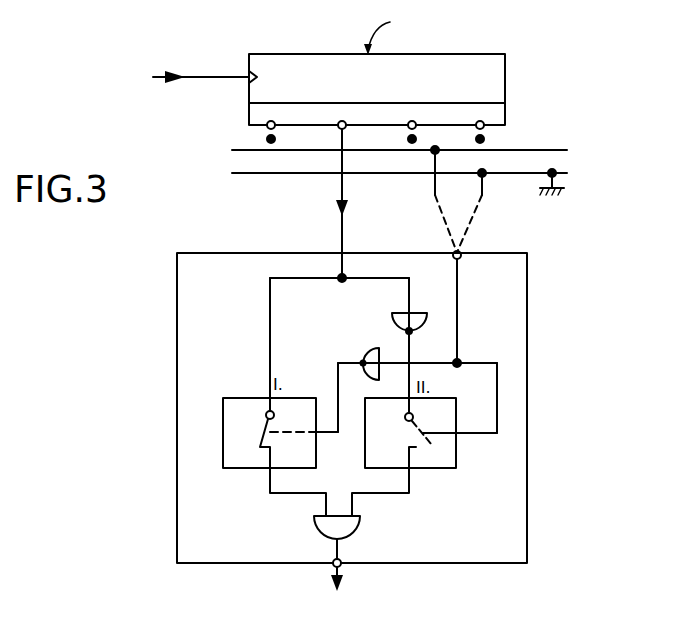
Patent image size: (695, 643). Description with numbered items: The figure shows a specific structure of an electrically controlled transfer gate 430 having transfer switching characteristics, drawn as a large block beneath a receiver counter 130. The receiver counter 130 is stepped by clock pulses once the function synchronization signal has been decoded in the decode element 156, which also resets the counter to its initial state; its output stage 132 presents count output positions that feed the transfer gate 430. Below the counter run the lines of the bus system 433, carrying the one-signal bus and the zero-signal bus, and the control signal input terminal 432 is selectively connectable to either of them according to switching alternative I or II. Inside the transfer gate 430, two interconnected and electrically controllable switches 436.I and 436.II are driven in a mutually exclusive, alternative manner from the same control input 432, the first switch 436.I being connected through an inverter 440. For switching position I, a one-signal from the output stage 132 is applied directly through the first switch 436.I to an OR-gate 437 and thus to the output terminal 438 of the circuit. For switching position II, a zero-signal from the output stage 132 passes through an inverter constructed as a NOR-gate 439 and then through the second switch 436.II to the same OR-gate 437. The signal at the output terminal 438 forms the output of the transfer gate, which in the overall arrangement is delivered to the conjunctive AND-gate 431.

The receiver counter 130 is at (272, 66).
The output stage 132 is at (252, 112).
The function synchronization signal decode element 156 is at (186, 72).
The transfer gate 430 is at (185, 265).
The AND-gate 431 is at (337, 604).
The control signal input terminal 432 is at (461, 252).
The bus system 433 is at (587, 140).
The first switch 436.I is at (238, 458).
The second switch 436.II is at (447, 458).
The OR-gate 437 is at (358, 521).
The output terminal 438 is at (342, 566).
The NOR-gate 439 is at (397, 318).
The inverter 440 is at (371, 355).